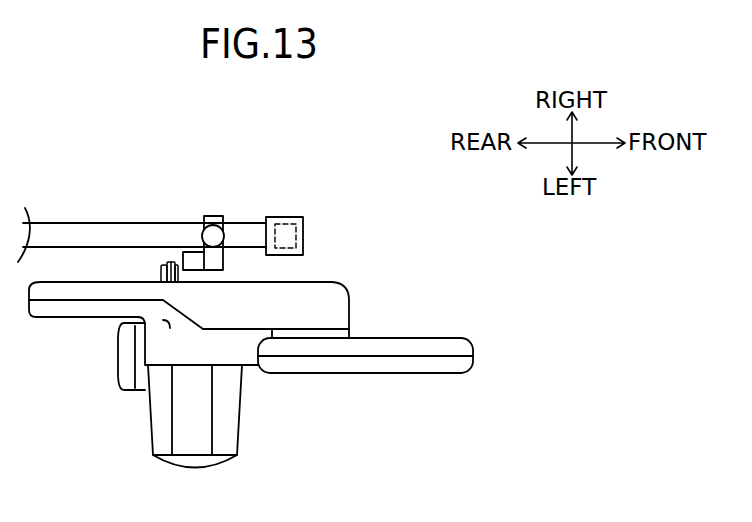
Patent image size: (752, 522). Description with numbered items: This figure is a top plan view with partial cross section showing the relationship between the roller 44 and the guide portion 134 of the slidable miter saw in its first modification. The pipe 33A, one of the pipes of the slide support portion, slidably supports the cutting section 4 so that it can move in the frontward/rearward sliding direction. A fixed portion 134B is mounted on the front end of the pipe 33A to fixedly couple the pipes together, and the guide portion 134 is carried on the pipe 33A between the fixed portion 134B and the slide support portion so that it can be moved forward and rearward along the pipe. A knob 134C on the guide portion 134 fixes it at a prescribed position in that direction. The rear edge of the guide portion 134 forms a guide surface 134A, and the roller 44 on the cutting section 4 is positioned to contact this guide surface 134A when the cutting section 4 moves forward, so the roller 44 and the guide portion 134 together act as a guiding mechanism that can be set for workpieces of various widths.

The cutting section 4 is at (368, 278).
The pipe 33A is at (68, 232).
The roller 44 is at (163, 272).
The guide portion 134 is at (231, 205).
The guide surface 134A is at (178, 252).
The fixed portion 134B is at (301, 220).
The knob 134C is at (226, 226).